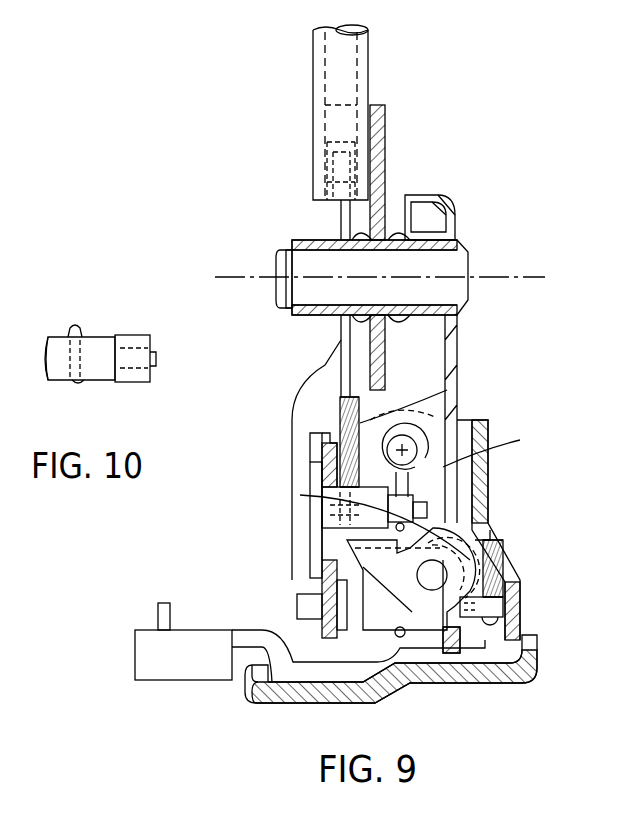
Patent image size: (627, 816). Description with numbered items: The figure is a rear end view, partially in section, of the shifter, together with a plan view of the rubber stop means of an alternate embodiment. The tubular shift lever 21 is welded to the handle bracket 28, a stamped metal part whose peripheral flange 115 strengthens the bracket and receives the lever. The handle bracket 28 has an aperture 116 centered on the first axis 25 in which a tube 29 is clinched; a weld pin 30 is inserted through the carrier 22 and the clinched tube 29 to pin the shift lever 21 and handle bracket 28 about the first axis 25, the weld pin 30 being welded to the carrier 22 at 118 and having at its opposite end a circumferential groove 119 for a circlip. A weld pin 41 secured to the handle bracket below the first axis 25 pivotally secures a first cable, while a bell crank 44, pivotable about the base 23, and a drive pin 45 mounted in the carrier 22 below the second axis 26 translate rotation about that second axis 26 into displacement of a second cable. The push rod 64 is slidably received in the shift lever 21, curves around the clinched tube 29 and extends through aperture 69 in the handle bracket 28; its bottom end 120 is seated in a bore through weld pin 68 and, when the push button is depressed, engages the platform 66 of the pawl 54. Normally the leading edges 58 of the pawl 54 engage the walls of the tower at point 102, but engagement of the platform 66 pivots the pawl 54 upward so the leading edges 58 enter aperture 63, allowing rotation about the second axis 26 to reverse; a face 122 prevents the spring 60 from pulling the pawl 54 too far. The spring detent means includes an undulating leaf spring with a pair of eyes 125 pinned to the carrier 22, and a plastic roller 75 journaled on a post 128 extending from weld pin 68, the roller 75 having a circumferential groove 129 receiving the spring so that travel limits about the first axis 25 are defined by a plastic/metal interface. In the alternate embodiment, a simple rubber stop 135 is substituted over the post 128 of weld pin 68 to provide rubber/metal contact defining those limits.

In FIG. 9, the shift lever 21 is at (368, 50).
In FIG. 9, the carrier 22 is at (455, 205).
In FIG. 9, the base 23 is at (470, 672).
In FIG. 9, the first axis 25 is at (505, 277).
In FIG. 9, the second axis 26 is at (406, 446).
In FIG. 9, the handle bracket 28 is at (386, 135).
In FIG. 9, the tube 29 is at (305, 240).
In FIG. 9, the weld pin 30 is at (390, 273).
In FIG. 9, the weld pin 41 is at (342, 628).
In FIG. 9, the bell crank 44 is at (237, 632).
In FIG. 9, the drive pin 45 is at (432, 576).
In FIG. 9, the pawl 54 is at (405, 583).
In FIG. 9, the leading edges 58 is at (502, 548).
In FIG. 9, the spring 60 is at (512, 572).
In FIG. 9, the aperture 63 is at (510, 575).
In FIG. 9, the push rod 64 is at (345, 208).
In FIG. 9, the platform 66 is at (480, 530).
In FIG. 9, the weld pin 68 is at (322, 512).
In FIG. 10, the weld pin 68 is at (92, 372).
In FIG. 9, the aperture 69 is at (322, 432).
In FIG. 9, the plastic roller 75 is at (422, 500).
In FIG. 9, the point 102 is at (518, 598).
In FIG. 9, the flange 115 is at (292, 415).
In FIG. 9, the aperture 116 is at (388, 226).
In FIG. 9, the weld 118 is at (463, 245).
In FIG. 9, the circumferential groove 119 is at (288, 320).
In FIG. 9, the bottom end 120 is at (330, 540).
In FIG. 9, the face 122 is at (492, 616).
In FIG. 9, the eyes 125 is at (406, 440).
In FIG. 9, the post 128 is at (430, 512).
In FIG. 10, the post 128 is at (156, 352).
In FIG. 9, the circumferential groove 129 is at (395, 462).
In FIG. 10, the rubber stop 135 is at (135, 383).